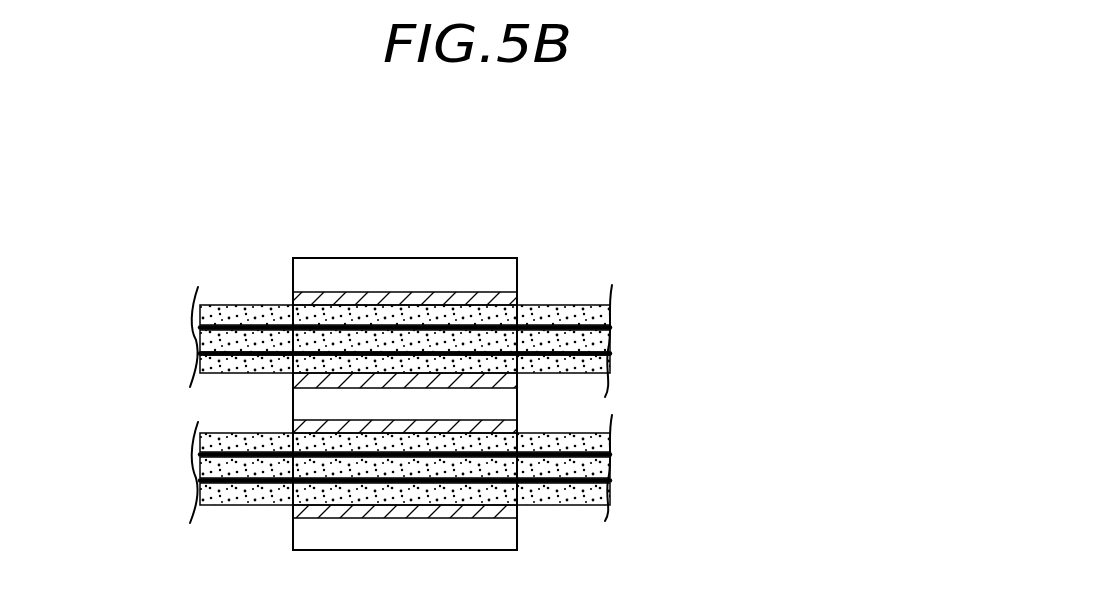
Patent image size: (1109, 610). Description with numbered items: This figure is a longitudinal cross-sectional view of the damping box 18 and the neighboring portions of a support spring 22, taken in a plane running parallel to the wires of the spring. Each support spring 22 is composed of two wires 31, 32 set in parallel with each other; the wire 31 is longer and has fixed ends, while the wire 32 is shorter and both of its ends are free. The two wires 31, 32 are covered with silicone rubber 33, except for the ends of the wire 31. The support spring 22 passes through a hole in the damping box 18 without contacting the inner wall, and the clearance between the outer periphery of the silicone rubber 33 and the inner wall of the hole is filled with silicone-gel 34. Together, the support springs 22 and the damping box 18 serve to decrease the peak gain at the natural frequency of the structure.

The damping box 18 is at (418, 258).
The support spring 22 is at (218, 297).
The wire 31 is at (612, 323).
The wire 32 is at (612, 350).
The silicone rubber 33 is at (583, 368).
The silicone-gel 34 is at (520, 297).